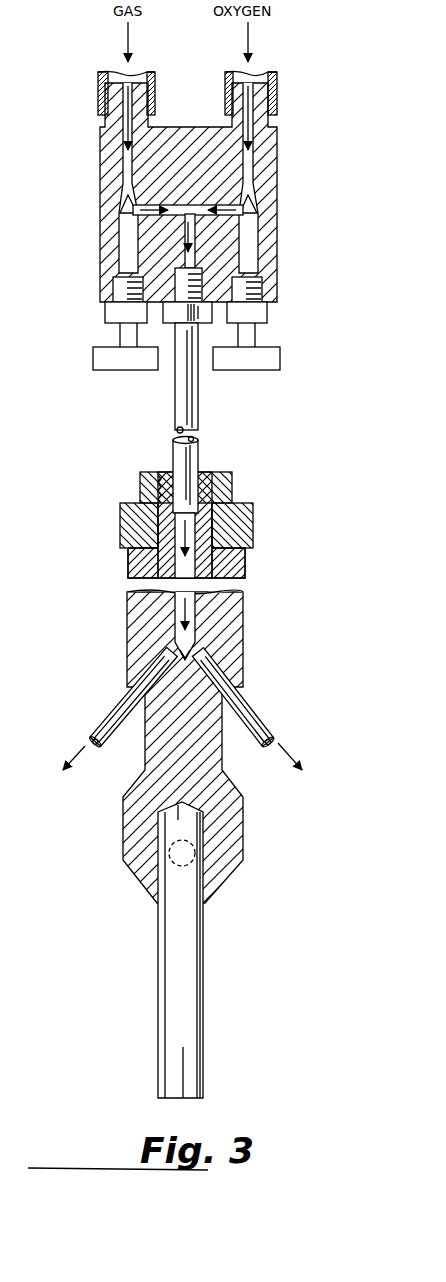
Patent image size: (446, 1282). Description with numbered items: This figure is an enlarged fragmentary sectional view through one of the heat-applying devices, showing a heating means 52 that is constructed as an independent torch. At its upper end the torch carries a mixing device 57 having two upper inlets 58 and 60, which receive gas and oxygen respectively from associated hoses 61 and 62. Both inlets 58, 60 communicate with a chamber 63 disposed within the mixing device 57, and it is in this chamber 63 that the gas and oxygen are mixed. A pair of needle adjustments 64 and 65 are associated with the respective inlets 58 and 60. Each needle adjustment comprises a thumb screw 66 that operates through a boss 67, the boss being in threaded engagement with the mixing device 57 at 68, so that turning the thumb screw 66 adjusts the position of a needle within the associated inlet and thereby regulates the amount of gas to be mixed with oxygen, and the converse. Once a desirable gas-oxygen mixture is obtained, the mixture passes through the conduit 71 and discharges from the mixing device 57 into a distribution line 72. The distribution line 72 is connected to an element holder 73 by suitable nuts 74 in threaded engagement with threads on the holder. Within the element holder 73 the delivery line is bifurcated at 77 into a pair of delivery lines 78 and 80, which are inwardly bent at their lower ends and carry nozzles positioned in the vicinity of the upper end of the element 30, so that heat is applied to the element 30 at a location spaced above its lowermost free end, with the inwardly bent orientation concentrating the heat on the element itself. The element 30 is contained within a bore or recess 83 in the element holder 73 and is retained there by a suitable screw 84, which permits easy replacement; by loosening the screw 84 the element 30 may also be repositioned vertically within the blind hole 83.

The element 30 is at (200, 997).
The heating means 52 is at (120, 632).
The mixing device 57 is at (92, 165).
The upper inlet 58 is at (130, 97).
The upper inlet 60 is at (272, 97).
The hose 61 is at (102, 82).
The hose 62 is at (277, 112).
The chamber 63 is at (180, 216).
The needle adjustment 64 is at (118, 312).
The needle adjustment 65 is at (256, 316).
The thumb screw 66 is at (272, 360).
The boss 67 is at (250, 305).
The threaded engagement 68 is at (262, 281).
The conduit 71 is at (185, 236).
The distribution line 72 is at (185, 404).
The element holder 73 is at (240, 560).
The nut 74 is at (225, 487).
The bifurcation 77 is at (207, 630).
The delivery line 78 is at (115, 712).
The delivery line 80 is at (255, 717).
The bore 83 is at (185, 802).
The screw 84 is at (195, 852).